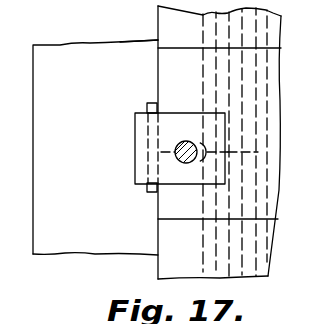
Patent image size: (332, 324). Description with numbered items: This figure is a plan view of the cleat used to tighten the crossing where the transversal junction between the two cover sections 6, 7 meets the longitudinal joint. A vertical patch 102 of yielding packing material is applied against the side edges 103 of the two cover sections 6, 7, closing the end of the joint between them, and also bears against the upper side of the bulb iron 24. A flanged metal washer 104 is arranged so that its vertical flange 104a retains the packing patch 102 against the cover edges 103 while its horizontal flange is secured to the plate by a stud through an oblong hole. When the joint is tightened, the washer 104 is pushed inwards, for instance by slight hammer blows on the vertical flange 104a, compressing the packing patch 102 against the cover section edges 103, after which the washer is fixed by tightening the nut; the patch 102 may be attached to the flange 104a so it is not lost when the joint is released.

The bulb iron 24 is at (69, 63).
The cover section 6 is at (264, 33).
The cover section 7 is at (258, 248).
The vertical patch 102 is at (152, 106).
The side edges 103 is at (163, 71).
The flanged metal washer 104 is at (192, 175).
The vertical flange 104a is at (134, 158).